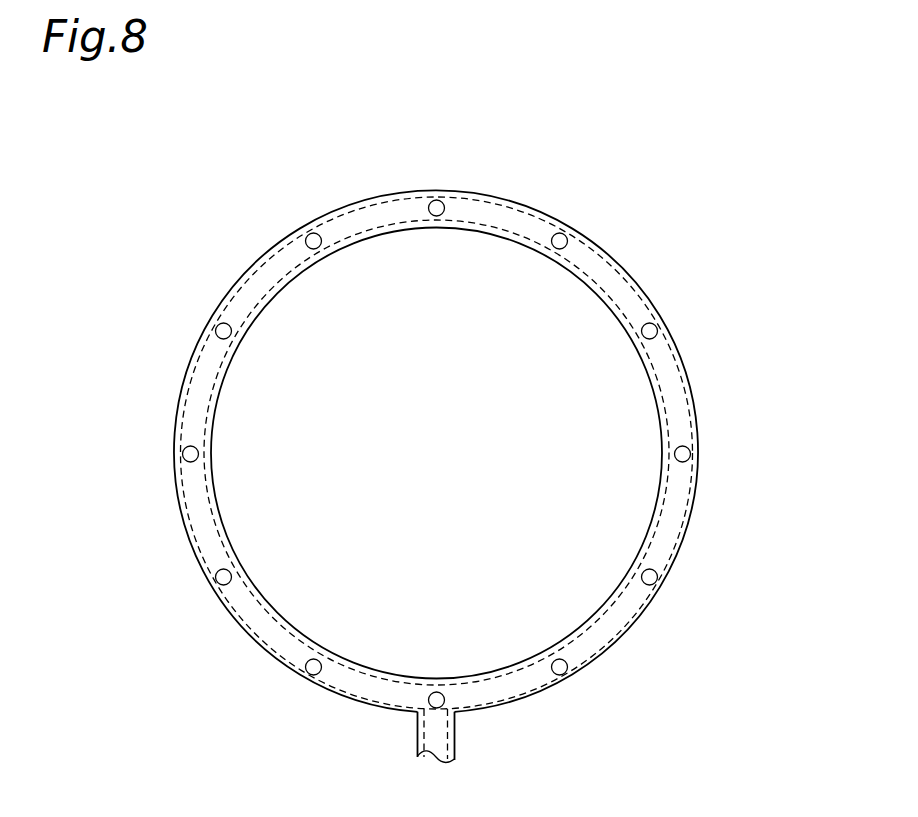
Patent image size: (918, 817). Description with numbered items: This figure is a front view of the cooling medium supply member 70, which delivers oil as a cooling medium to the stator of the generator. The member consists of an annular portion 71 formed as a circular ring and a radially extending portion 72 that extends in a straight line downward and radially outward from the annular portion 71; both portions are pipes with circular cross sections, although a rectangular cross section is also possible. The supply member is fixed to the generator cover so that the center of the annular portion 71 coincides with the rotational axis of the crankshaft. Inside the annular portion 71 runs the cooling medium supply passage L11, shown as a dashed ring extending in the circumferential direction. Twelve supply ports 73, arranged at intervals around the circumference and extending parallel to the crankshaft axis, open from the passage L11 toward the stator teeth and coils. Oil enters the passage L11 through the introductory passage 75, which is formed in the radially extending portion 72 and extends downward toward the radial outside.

The cooling medium supply member 70 is at (469, 473).
The annular portion 71 is at (683, 349).
The radially extending portion 72 is at (445, 744).
The supply port 73 is at (565, 233).
The introductory passage 75 is at (454, 747).
The cooling medium supply passage L11 is at (588, 647).